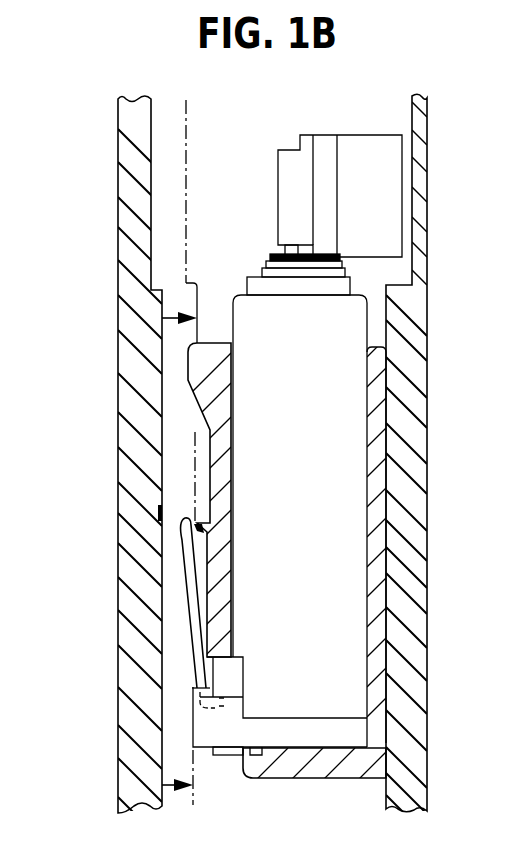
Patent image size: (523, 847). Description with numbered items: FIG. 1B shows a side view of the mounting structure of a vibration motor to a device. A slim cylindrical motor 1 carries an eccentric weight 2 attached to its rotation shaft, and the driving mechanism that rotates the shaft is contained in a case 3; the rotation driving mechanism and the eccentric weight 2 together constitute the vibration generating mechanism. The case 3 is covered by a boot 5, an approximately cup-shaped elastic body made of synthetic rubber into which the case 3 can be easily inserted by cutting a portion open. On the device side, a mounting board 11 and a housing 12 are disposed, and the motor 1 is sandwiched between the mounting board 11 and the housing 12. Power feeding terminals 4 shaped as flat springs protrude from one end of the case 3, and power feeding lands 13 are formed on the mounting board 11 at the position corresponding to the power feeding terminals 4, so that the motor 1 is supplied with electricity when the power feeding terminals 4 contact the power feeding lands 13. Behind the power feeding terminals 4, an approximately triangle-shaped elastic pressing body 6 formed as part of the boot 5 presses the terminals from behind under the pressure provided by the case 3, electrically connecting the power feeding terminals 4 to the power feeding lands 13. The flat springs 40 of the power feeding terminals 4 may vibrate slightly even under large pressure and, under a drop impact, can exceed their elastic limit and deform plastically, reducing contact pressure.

The motor 1 is at (240, 270).
The eccentric weight 2 is at (380, 203).
The case 3 is at (280, 328).
The power feeding terminals 4 is at (205, 531).
The boot 5 is at (360, 761).
The elastic pressing body 6 is at (178, 521).
The mounting board 11 is at (136, 717).
The housing 12 is at (418, 500).
The power feeding lands 13 is at (160, 526).
The flat springs 40 is at (190, 578).